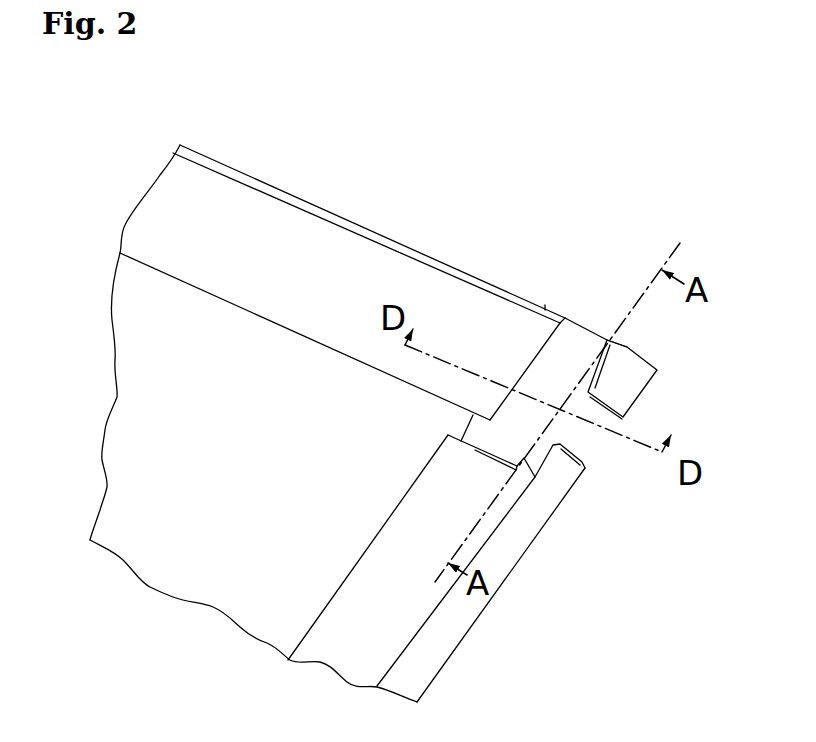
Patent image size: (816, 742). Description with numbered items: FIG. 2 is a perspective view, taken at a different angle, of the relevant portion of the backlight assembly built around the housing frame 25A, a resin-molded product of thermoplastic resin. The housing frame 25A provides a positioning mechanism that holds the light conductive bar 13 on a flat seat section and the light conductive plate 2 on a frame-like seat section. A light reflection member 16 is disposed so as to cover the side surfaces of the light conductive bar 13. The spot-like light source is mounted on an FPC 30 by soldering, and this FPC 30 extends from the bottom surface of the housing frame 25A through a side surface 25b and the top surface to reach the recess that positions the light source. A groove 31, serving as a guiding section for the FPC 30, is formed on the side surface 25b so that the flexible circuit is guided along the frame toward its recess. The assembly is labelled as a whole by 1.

The first panel 1 is at (332, 198).
The light conductive plate 2 is at (168, 502).
The light reflection member 16 is at (342, 263).
The light conductive bar 13 is at (463, 338).
The groove 31 is at (622, 424).
The FPC 30 is at (583, 440).
The side surface 25b is at (552, 492).
The housing frame 25A is at (371, 638).